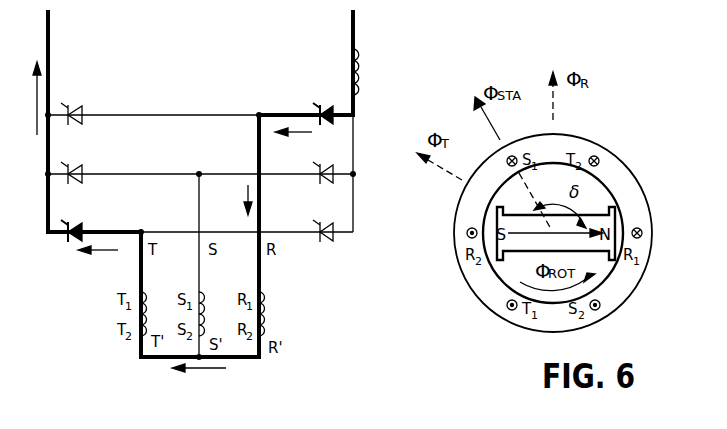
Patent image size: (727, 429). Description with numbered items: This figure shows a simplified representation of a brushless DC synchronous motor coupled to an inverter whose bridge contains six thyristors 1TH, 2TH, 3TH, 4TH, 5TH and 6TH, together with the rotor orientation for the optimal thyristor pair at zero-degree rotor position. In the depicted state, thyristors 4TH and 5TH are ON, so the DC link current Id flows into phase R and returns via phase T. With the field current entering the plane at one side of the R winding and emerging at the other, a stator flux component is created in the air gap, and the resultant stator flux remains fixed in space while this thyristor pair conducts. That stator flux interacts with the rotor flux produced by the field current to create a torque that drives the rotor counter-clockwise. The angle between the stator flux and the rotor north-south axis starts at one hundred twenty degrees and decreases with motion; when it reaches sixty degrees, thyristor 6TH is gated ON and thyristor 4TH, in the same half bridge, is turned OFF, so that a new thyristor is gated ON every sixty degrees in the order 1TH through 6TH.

The thyristor 1TH is at (88, 99).
The thyristor 2TH is at (327, 219).
The thyristor 3TH is at (89, 164).
The thyristor 4TH is at (310, 98).
The thyristor 5TH is at (89, 220).
The thyristor 6TH is at (327, 161).
The DC link current Id is at (368, 72).